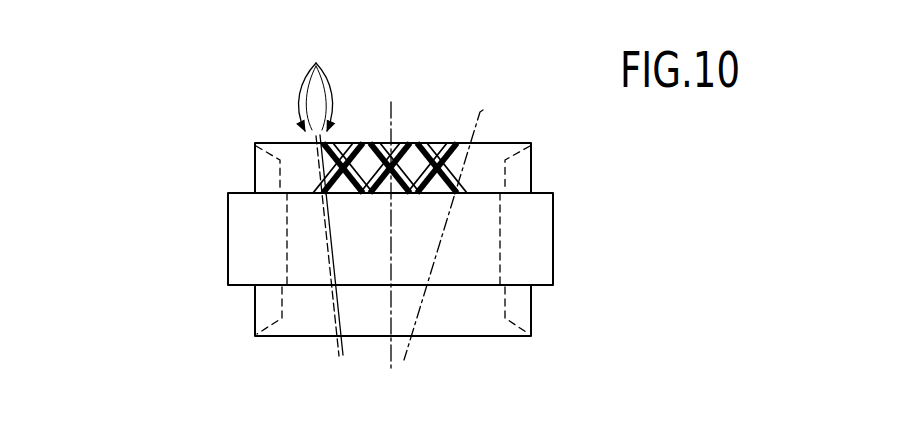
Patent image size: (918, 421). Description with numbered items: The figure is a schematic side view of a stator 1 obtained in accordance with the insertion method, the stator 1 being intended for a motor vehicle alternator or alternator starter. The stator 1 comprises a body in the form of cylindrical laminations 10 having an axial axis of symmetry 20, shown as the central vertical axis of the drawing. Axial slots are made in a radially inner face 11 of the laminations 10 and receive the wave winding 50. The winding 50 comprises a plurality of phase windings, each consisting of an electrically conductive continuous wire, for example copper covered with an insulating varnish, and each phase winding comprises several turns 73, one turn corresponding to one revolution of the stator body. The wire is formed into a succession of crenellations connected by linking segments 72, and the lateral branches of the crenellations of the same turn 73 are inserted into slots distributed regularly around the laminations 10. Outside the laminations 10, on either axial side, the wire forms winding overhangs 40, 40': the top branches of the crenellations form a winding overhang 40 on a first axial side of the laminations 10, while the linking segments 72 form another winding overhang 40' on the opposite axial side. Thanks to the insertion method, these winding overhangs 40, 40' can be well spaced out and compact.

The stator 1 is at (124, 233).
The laminations 10 is at (245, 255).
The radially inner face 11 is at (287, 243).
The axis of symmetry 20 is at (392, 318).
The winding overhang 40 is at (455, 310).
The winding overhang 40' is at (460, 154).
The wave winding 50 is at (340, 126).
The linking segments 72 is at (390, 135).
The turns 73 is at (322, 198).